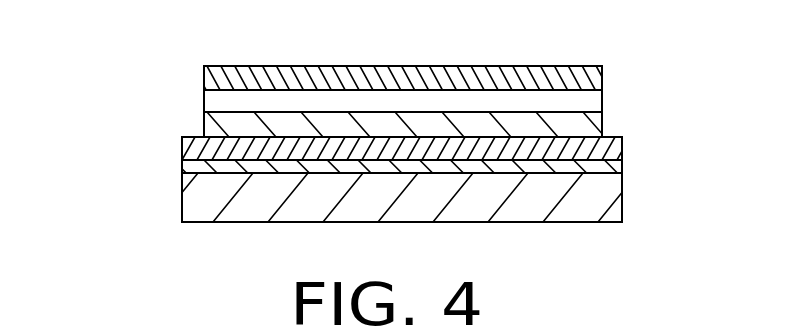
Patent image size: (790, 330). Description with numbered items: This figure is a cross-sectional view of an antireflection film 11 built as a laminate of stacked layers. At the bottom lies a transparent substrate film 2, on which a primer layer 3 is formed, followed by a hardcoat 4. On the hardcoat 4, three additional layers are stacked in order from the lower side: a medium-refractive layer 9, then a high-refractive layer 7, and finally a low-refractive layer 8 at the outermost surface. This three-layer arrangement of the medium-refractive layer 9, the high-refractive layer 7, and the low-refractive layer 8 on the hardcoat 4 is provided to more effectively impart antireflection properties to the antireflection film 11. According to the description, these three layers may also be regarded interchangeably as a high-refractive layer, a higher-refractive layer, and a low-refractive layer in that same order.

The antireflection film 11 is at (162, 138).
The low-refractive layer 8 is at (593, 75).
The high-refractive layer 7 is at (593, 100).
The medium-refractive layer 9 is at (593, 120).
The hardcoat 4 is at (610, 145).
The primer layer 3 is at (610, 165).
The transparent substrate film 2 is at (593, 205).